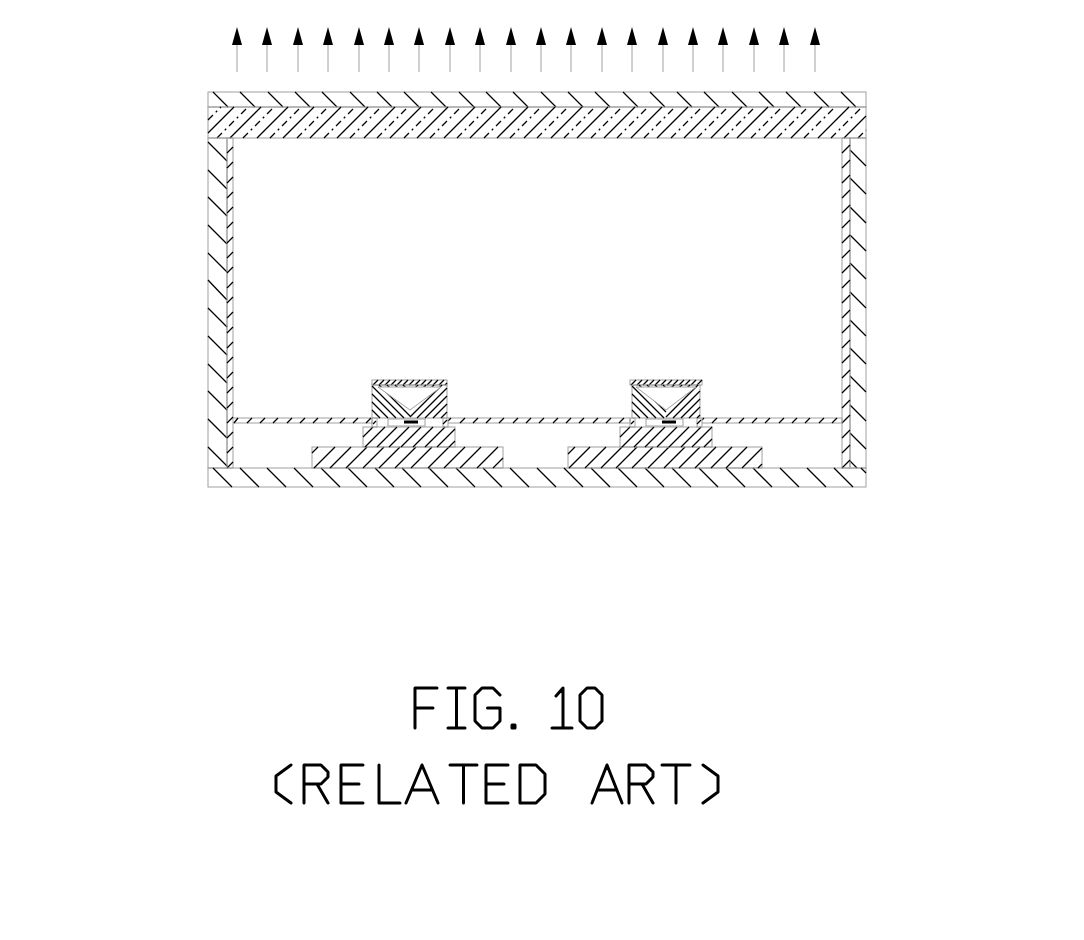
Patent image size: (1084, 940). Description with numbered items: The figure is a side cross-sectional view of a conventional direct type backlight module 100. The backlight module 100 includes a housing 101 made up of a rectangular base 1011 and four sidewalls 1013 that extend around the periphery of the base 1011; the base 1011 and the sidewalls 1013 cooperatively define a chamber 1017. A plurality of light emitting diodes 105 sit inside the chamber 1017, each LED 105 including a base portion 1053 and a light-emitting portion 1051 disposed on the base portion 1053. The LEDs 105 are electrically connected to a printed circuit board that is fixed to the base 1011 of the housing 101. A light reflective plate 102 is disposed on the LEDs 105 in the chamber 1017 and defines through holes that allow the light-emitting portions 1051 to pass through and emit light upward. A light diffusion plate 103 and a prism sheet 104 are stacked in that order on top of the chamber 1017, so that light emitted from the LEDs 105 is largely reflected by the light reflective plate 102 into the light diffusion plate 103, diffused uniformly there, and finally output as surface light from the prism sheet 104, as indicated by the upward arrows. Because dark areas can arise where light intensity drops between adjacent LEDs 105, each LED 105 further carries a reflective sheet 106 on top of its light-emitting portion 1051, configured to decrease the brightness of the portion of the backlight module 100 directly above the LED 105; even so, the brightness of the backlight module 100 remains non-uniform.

The backlight module 100 is at (186, 58).
The housing 101 is at (116, 344).
The base 1011 is at (263, 480).
The sidewalls 1013 is at (218, 360).
The chamber 1017 is at (826, 198).
The light reflective plate 102 is at (768, 420).
The light diffusion plate 103 is at (853, 125).
The prism sheet 104 is at (833, 97).
The light emitting diodes 105 is at (430, 563).
The light-emitting portion 1051 is at (375, 408).
The base portion 1053 is at (400, 432).
The reflective sheet 106 is at (397, 380).